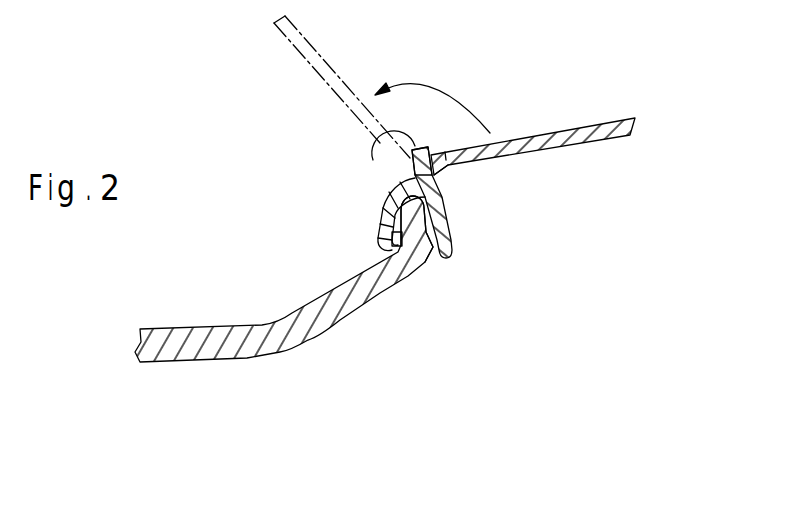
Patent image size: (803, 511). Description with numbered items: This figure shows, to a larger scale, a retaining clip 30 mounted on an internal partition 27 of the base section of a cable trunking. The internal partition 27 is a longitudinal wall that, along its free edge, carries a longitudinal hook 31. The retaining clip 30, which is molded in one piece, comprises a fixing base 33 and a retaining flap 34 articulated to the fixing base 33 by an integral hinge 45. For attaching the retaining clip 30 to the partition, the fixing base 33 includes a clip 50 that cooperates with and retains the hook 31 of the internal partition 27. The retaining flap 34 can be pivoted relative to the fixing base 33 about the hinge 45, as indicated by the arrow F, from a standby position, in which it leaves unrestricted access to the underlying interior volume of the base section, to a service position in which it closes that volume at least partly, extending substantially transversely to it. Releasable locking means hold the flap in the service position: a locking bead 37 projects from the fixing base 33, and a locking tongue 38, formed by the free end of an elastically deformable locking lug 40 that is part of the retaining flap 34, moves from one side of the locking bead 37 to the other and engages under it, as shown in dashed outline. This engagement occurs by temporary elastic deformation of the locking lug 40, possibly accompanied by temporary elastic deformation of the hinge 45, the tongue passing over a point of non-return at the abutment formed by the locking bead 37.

The internal partition 27 is at (186, 356).
The retaining clip 30 is at (650, 106).
The longitudinal hook 31 is at (384, 214).
The fixing base 33 is at (452, 260).
The retaining flap 34 is at (590, 143).
The locking bead 37 is at (386, 139).
The locking tongue 38 is at (438, 151).
The locking lug 40 is at (503, 156).
The integral hinge 45 is at (437, 177).
The clip 50 is at (398, 278).